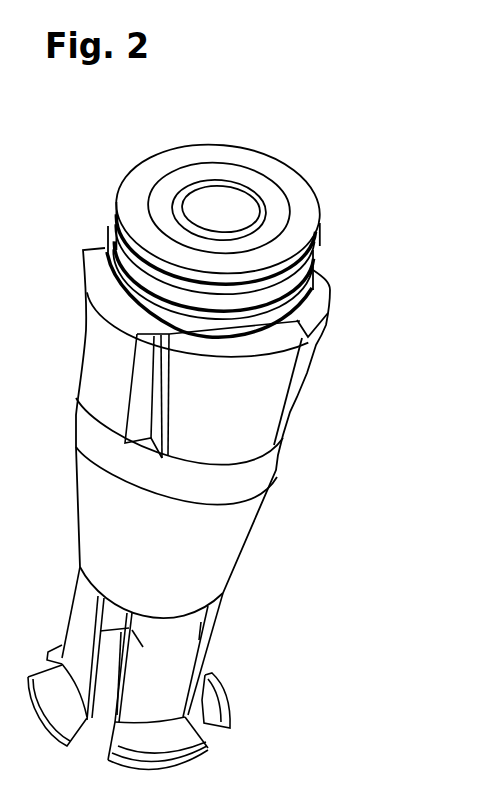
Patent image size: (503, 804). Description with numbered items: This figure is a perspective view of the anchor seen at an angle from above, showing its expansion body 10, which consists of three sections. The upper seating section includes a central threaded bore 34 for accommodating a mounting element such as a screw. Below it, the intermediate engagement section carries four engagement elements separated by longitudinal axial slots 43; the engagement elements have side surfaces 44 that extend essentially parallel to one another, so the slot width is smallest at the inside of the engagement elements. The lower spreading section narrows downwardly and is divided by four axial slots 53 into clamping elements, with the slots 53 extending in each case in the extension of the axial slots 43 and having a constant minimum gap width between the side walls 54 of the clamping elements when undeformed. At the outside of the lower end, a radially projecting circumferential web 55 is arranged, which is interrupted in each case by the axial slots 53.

The expansion body 10 is at (287, 473).
The central threaded bore 34 is at (258, 208).
The axial slots 43 is at (308, 368).
The side surfaces 44 is at (145, 403).
The axial slots 53 is at (207, 638).
The side walls 54 is at (112, 652).
The radially projecting circumferential web 55 is at (222, 712).